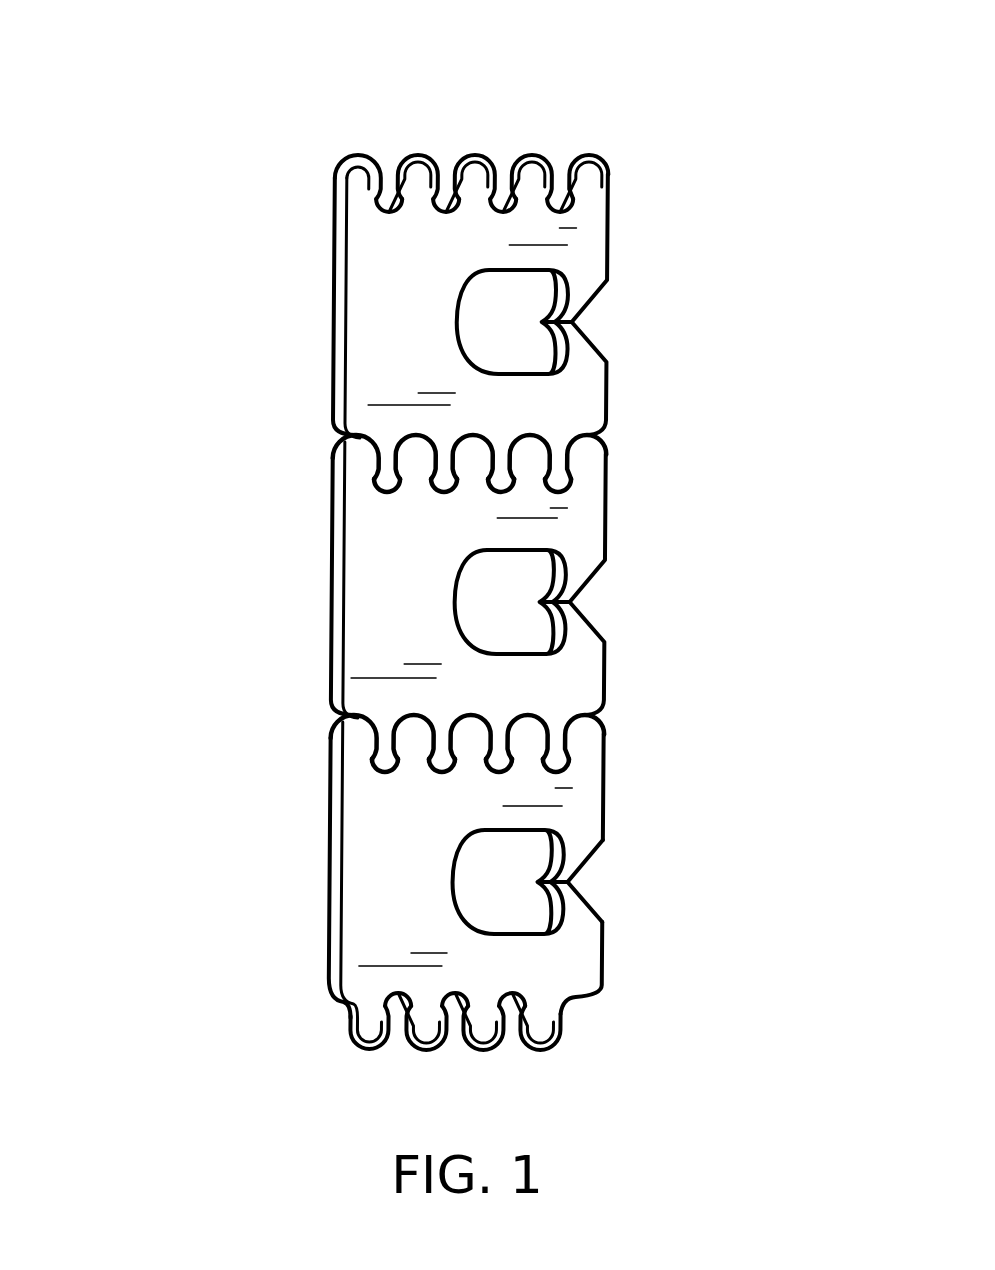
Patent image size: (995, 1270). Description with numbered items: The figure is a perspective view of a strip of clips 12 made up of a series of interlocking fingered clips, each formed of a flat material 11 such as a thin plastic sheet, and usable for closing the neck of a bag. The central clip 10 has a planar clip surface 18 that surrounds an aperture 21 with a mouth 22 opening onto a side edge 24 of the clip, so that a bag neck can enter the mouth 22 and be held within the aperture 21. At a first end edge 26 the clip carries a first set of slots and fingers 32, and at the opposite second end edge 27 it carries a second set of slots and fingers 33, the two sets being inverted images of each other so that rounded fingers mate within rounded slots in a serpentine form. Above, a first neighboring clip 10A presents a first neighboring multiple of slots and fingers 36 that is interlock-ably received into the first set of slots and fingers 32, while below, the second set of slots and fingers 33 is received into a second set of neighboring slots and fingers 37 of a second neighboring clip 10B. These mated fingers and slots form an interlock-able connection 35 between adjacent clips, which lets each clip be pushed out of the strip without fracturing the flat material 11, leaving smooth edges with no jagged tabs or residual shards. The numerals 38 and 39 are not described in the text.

The strip of clips 12 is at (166, 538).
The clip 10 is at (370, 545).
The first neighboring clip 10A is at (381, 260).
The second neighboring clip 10B is at (373, 955).
The flat material 11 is at (362, 372).
The planar clip surface 18 is at (373, 567).
The aperture 21 is at (493, 860).
The mouth 22 is at (572, 882).
The side edge 24 is at (606, 943).
The first end edge 26 is at (543, 157).
The second end edge 27 is at (434, 1050).
The first set of slots and fingers 32 is at (555, 180).
The second set of slots and fingers 33 is at (368, 1012).
The interlock-able connection 35 is at (579, 470).
The first neighboring multiple of slots and fingers 36 is at (564, 740).
The second set of neighboring slots and fingers 37 is at (375, 480).
The end valley 38 is at (389, 210).
The crest lobe 39 is at (422, 175).